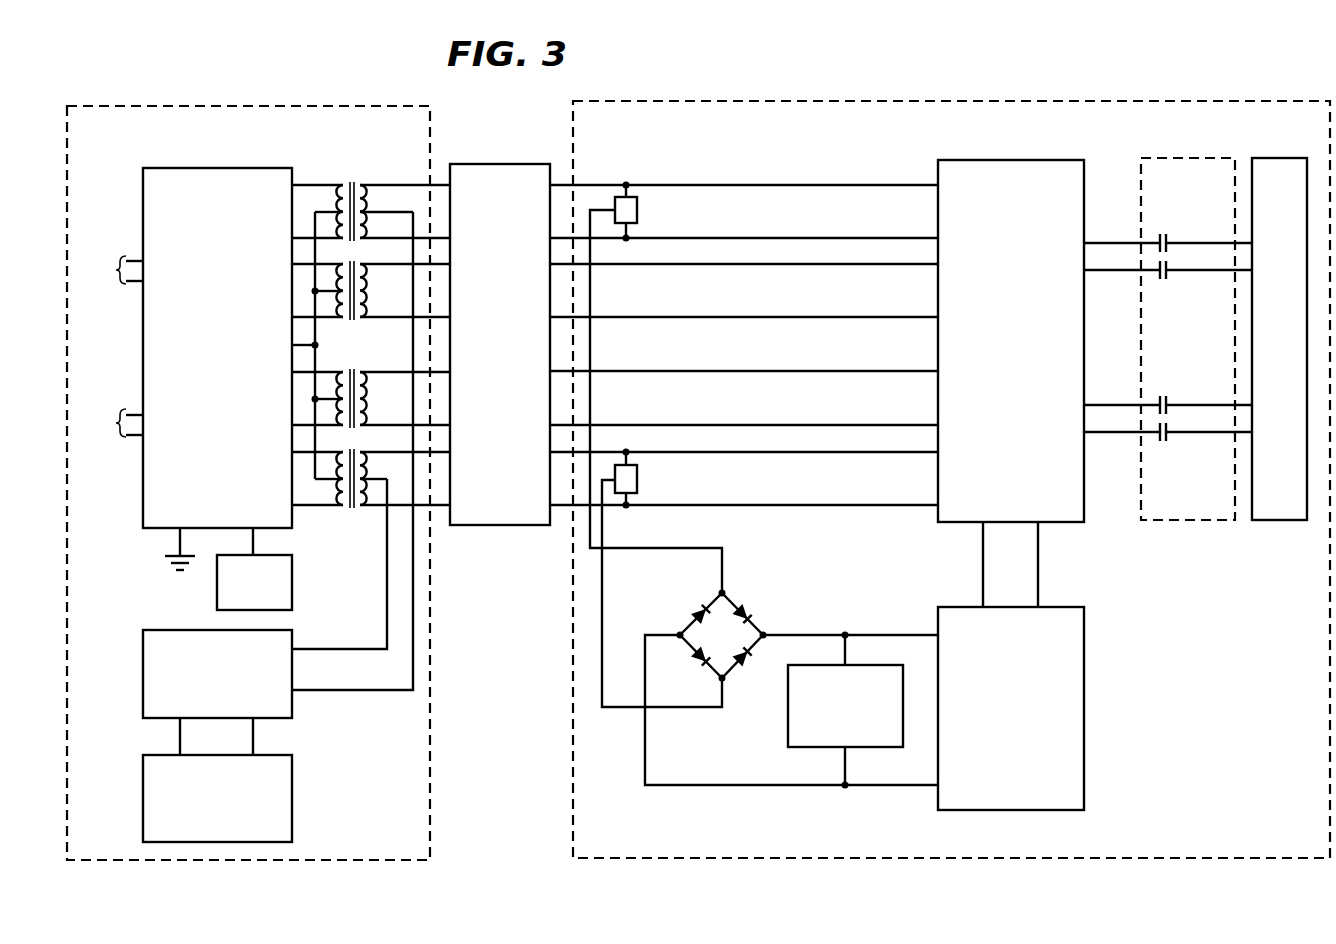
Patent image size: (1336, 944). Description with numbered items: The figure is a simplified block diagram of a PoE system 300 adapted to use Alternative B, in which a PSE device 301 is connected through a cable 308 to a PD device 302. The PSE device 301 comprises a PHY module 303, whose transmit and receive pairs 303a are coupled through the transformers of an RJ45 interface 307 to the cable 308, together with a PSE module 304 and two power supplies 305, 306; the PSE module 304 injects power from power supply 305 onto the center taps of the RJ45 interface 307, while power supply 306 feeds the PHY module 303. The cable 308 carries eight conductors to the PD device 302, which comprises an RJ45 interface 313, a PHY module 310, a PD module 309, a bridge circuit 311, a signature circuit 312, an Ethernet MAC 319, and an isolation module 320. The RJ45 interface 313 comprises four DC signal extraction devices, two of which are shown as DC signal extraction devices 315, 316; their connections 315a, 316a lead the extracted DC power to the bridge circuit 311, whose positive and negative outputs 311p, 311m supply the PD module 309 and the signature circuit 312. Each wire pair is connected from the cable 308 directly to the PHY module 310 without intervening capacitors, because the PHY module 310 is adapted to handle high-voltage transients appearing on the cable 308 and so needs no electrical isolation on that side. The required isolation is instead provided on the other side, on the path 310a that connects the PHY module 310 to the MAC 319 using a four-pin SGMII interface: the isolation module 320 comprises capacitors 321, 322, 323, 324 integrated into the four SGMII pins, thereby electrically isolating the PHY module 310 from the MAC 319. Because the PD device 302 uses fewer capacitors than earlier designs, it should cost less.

The PoE system 300 is at (516, 100).
The PSE device 301 is at (117, 106).
The PD device 302 is at (1075, 101).
The PHY module 303 is at (205, 168).
The PHY transmit/receive pairs 303a is at (100, 292).
The PSE module 304 is at (143, 677).
The power supply 305 is at (143, 800).
The power supply 306 is at (292, 582).
The RJ45 interface 307 is at (378, 172).
The cable 308 is at (502, 164).
The PD module 309 is at (1084, 711).
The PHY module 310 is at (1040, 160).
The path 310a is at (1107, 280).
The bridge circuit 311 is at (713, 592).
The positive output 311p is at (795, 635).
The negative output 311m is at (728, 785).
The signature circuit 312 is at (788, 722).
The RJ45 interface 313 is at (588, 168).
The DC signal extraction device 315 is at (637, 210).
The center tap connection 315a is at (722, 578).
The DC signal extraction device 316 is at (637, 480).
The center tap connection 316a is at (616, 708).
The Ethernet MAC 319 is at (1262, 158).
The isolation module 320 is at (1160, 158).
The capacitor 321 is at (1167, 236).
The capacitor 322 is at (1167, 278).
The capacitor 323 is at (1167, 398).
The capacitor 324 is at (1167, 440).